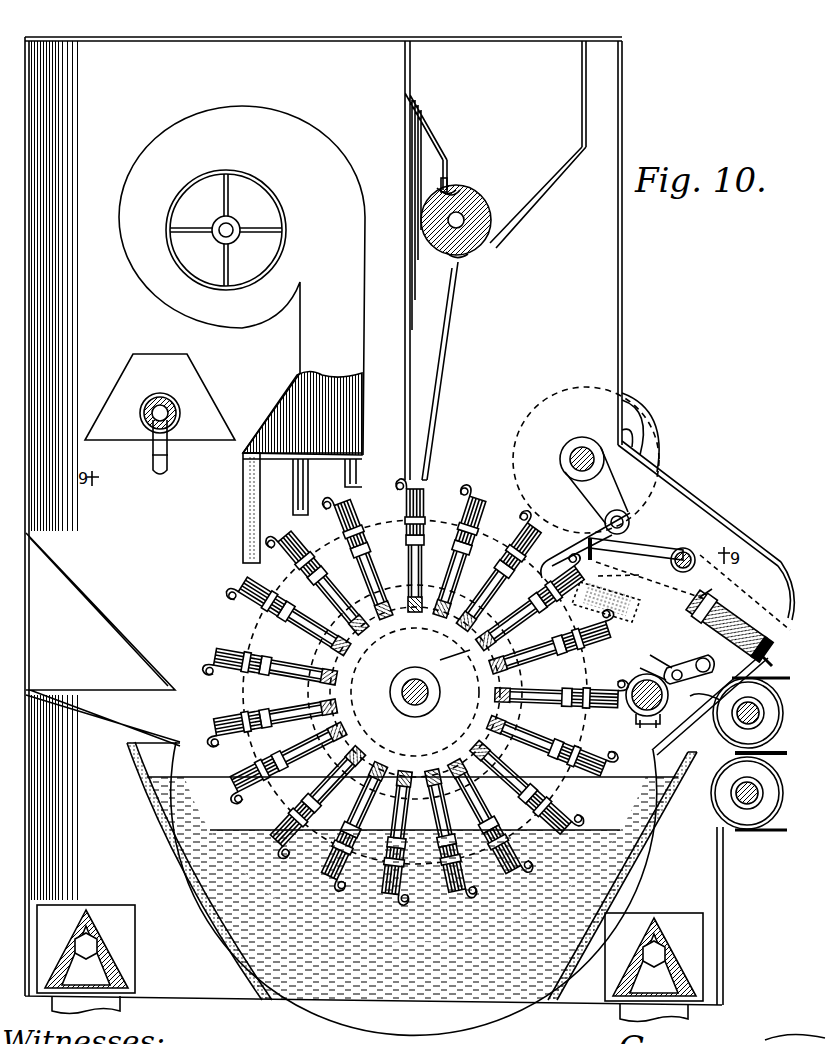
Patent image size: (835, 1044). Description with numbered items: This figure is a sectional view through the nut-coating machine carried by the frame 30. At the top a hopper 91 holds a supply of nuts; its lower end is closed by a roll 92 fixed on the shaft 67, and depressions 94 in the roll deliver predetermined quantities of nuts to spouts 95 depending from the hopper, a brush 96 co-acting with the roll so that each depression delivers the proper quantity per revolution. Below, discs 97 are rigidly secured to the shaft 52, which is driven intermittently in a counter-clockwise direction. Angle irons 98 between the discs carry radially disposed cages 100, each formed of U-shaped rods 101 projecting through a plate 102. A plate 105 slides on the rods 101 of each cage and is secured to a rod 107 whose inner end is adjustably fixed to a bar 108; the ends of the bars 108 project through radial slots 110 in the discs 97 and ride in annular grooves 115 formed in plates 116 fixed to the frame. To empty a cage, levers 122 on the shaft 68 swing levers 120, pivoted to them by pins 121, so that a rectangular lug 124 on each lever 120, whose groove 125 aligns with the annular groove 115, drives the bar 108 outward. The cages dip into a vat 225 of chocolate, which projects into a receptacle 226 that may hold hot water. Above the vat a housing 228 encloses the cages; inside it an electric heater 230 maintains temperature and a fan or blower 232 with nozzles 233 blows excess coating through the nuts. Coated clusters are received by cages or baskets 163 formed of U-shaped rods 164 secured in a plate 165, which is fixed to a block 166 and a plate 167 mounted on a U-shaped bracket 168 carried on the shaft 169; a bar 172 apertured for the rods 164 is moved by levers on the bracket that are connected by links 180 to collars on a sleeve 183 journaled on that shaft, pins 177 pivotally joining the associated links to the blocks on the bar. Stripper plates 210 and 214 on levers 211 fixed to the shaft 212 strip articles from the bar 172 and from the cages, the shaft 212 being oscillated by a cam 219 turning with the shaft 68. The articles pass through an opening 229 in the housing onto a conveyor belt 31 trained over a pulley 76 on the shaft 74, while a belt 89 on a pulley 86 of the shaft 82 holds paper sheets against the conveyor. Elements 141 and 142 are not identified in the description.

The housing 228 is at (197, 25).
The fan or blower 232 is at (257, 115).
The hopper 91 is at (484, 41).
The brush 96 is at (441, 186).
The depressions 94 is at (449, 193).
The shaft 67 is at (466, 207).
The roll 92 is at (489, 212).
The spouts 95 is at (448, 380).
The electric heater 230 is at (157, 363).
The nozzles 233 is at (243, 472).
The shaft 68 is at (570, 458).
The levers 122 is at (586, 493).
The levers 120 is at (588, 528).
The pins 121 is at (629, 524).
The cam 219 is at (660, 452).
The stripper plate 214 is at (612, 551).
The shaft 212 is at (686, 553).
The opening 229 is at (777, 570).
The levers 211 is at (740, 614).
The brush holder 142 is at (240, 590).
The discs 97 is at (259, 627).
The angle irons 98 is at (317, 582).
The cages 100 is at (352, 522).
The plate 102 is at (356, 563).
The plate 105 is at (399, 545).
The plates 116 is at (399, 583).
The slots 110 is at (432, 580).
The groove 125 is at (478, 592).
The plate 165 is at (578, 578).
The block 166 is at (702, 596).
The plate 167 is at (603, 619).
The U-shaped rods 164 is at (708, 634).
The links 180 is at (690, 654).
The bar 172 is at (768, 650).
The cages or baskets 163 is at (782, 655).
The stripper plate 210 is at (768, 669).
The conveyor belt 31 is at (748, 709).
The pulley 76 is at (780, 712).
The shaft 74 is at (758, 713).
The U-shaped bracket 168 is at (706, 708).
The sleeve 183 is at (710, 704).
The shaft 169 is at (630, 688).
The U-shaped rods 101 is at (411, 691).
The brush holder 141 is at (222, 656).
The rod 107 is at (384, 798).
The annular grooves 115 is at (402, 622).
The bar 108 is at (433, 622).
The rectangular lug 124 is at (482, 652).
The shaft 52 is at (418, 706).
The pins 177 is at (532, 622).
The shaft 82 is at (740, 796).
The pulley 86 is at (735, 802).
The belt 89 is at (768, 832).
The receptacle 226 is at (183, 855).
The vat 225 is at (612, 812).
The frame 30 is at (410, 888).